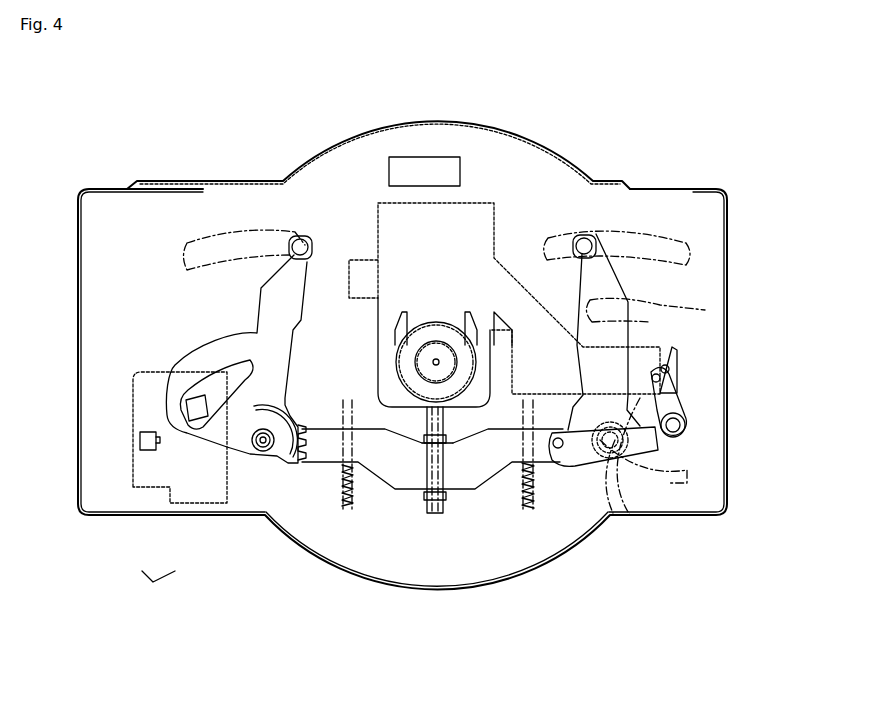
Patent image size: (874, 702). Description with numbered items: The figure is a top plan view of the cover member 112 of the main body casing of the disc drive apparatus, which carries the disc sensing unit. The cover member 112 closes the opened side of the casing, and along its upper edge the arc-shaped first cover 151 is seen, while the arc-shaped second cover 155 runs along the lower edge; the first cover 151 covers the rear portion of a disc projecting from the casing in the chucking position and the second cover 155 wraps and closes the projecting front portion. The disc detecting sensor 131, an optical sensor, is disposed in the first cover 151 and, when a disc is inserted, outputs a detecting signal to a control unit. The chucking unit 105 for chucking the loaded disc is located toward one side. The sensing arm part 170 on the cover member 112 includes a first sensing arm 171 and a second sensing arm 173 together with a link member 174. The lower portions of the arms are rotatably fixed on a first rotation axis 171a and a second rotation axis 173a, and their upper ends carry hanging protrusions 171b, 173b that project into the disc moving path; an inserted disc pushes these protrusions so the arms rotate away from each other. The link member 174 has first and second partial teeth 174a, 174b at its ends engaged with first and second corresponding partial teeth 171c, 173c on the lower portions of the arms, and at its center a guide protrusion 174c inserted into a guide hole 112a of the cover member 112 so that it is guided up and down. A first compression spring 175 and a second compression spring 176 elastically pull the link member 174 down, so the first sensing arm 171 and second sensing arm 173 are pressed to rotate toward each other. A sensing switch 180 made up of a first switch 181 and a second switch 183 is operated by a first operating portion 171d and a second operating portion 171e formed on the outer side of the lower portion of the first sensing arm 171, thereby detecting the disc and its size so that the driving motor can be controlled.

The chucking unit 105 is at (694, 425).
The cover member 112 is at (122, 190).
The guide hole 112a is at (443, 516).
The disc detecting sensor 131 is at (418, 165).
The first cover 151 is at (465, 122).
The second cover 155 is at (421, 590).
The sensing arm part 170 is at (201, 356).
The first sensing arm 171 is at (268, 288).
The first rotation axis 171a is at (258, 452).
The hanging protrusion 171b is at (299, 240).
The first corresponding partial teeth 171c is at (302, 468).
The first operating portion 171d is at (188, 393).
The second operating portion 171e is at (182, 411).
The second sensing arm 173 is at (610, 285).
The second rotation axis 173a is at (628, 472).
The hanging protrusion 173b is at (587, 244).
The second corresponding partial teeth 173c is at (596, 470).
The link member 174 is at (478, 492).
The first partial teeth 174a is at (300, 470).
The second partial teeth 174b is at (562, 468).
The guide protrusion 174c is at (400, 495).
The first compression spring 175 is at (346, 514).
The second compression spring 176 is at (528, 514).
The sensing switch 180 is at (157, 589).
The first switch 181 is at (190, 500).
The second switch 183 is at (148, 451).